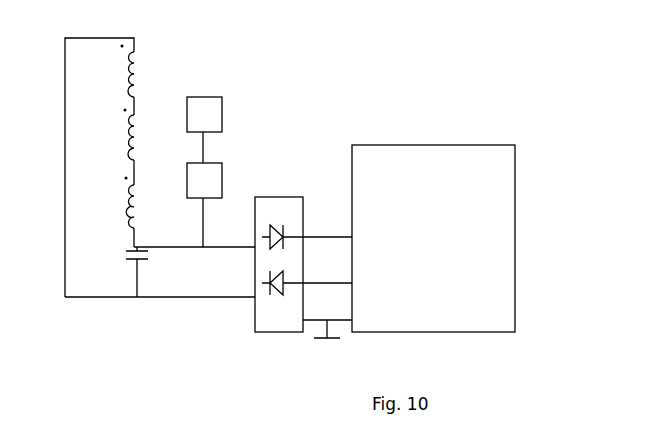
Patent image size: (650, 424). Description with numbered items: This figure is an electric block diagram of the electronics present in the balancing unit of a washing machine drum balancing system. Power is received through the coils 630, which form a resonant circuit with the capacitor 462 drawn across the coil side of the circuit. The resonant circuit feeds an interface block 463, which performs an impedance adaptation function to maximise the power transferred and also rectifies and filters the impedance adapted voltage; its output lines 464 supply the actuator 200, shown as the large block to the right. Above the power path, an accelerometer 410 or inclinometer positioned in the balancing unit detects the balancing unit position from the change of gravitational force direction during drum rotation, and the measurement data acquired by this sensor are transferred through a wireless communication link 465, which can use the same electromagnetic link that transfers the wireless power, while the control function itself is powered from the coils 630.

The actuator 200 is at (385, 145).
The accelerometer 410 is at (212, 97).
The capacitor 462 is at (130, 261).
The interface block 463 is at (272, 196).
The output lines 464 is at (337, 283).
The wireless communication link 465 is at (223, 177).
The coils 630 is at (142, 196).